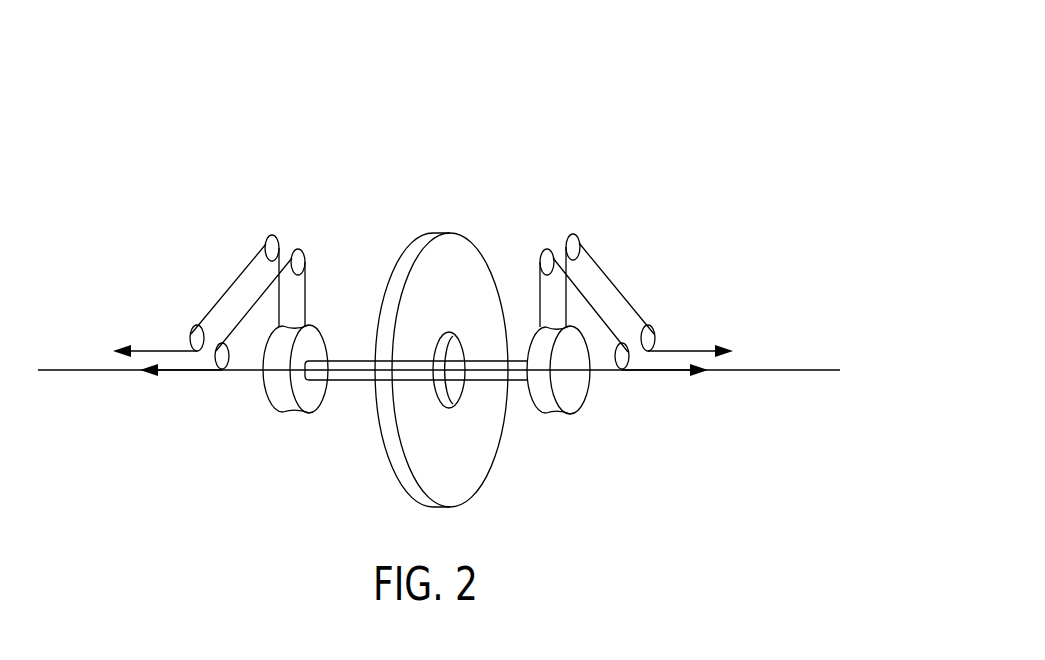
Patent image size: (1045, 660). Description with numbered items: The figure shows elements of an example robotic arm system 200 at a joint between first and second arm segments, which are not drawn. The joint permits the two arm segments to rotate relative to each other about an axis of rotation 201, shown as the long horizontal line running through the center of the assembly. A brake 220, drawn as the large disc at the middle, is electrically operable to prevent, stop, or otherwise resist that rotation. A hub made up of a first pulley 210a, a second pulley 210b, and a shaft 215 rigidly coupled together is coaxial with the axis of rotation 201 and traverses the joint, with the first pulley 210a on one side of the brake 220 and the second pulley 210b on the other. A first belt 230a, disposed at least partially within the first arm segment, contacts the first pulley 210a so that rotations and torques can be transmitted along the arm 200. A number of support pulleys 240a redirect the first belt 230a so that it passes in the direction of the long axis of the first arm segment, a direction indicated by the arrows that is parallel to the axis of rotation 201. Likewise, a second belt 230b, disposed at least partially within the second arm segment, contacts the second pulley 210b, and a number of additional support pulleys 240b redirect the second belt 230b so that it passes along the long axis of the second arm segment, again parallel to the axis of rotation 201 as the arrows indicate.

The robotic arm system 200 is at (710, 106).
The axis of rotation 201 is at (747, 372).
The first pulley 210a is at (310, 405).
The second pulley 210b is at (543, 405).
The shaft 215 is at (357, 382).
The brake 220 is at (457, 255).
The first belt 230a is at (195, 374).
The second belt 230b is at (677, 352).
The support pulleys 240a is at (300, 250).
The additional support pulleys 240b is at (547, 250).